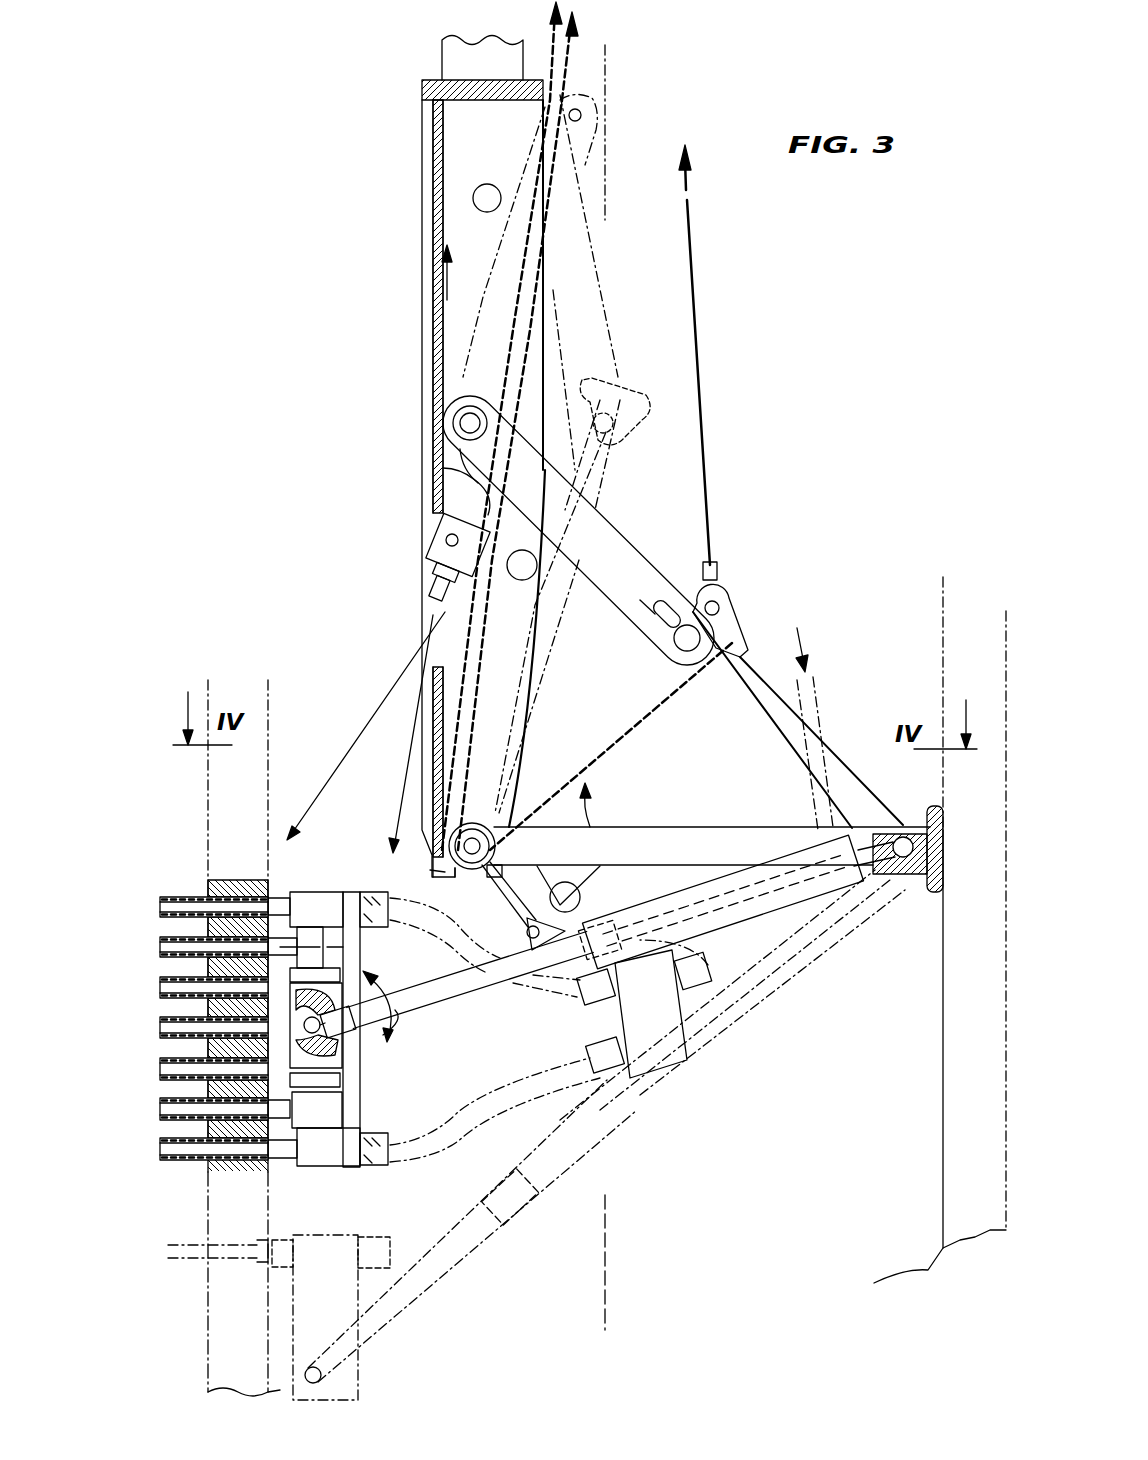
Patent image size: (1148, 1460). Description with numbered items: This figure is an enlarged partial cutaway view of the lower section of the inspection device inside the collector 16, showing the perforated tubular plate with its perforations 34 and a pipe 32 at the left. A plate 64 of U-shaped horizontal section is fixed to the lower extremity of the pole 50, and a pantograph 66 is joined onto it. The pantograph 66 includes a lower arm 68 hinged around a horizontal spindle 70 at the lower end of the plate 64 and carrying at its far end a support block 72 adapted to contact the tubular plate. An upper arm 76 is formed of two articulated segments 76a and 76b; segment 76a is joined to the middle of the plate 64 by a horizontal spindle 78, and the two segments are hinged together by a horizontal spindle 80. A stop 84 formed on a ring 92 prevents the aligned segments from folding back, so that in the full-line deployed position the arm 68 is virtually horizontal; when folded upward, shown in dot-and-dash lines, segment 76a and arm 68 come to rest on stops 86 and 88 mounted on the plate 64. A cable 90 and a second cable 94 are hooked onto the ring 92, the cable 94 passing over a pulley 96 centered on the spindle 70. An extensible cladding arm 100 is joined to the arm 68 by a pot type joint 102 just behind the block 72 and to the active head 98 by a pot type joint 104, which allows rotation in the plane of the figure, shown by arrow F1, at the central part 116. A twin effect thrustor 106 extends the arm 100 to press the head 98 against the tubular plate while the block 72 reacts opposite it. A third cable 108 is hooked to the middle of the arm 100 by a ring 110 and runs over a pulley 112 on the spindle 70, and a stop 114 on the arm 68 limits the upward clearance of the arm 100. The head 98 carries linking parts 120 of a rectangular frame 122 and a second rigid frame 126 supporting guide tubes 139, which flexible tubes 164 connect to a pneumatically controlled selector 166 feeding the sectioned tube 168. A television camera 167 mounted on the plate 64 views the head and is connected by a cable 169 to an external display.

The collector 16 is at (878, 1143).
The pipe rack 32 is at (175, 906).
The perforations 34 is at (195, 898).
The pole 50 is at (438, 70).
The plate 64 is at (418, 133).
The pantograph 66 is at (798, 725).
The lower arm 68 is at (757, 843).
The horizontal spindle 70 is at (484, 815).
The support block 72 is at (900, 897).
The arm 76 is at (545, 547).
The segment 76a is at (575, 700).
The segment 76b is at (735, 681).
The horizontal spindle 78 is at (455, 400).
The horizontal spindle 80 is at (678, 521).
The stop 84 is at (745, 600).
The stop 86 is at (473, 196).
The stop 88 is at (536, 556).
The cable 90 is at (690, 255).
The ring 92 is at (725, 602).
The cable 94 is at (527, 223).
The pulley 96 is at (430, 870).
The active head 98 is at (440, 1043).
The extensible cladding arm 100 is at (447, 1000).
The pot type joint 102 is at (890, 870).
The pot type joint 104 is at (343, 1075).
The twin effect thrustor 106 is at (745, 950).
The cable 108 is at (482, 602).
The ring 110 is at (526, 932).
The pulley 112 is at (396, 855).
The stop 114 is at (580, 897).
The central part 116 is at (345, 992).
The linking parts 120 is at (240, 1145).
The rectangular frame 122 is at (483, 1163).
The second rigid frame 126 is at (313, 1167).
The guide tube 139 is at (372, 892).
The flexible tubes 164 is at (545, 1060).
The selector 166 is at (675, 1070).
The television camera 167 is at (445, 528).
The tube 168 is at (818, 695).
The cable 169 is at (440, 466).
The arrow F1 is at (392, 1020).